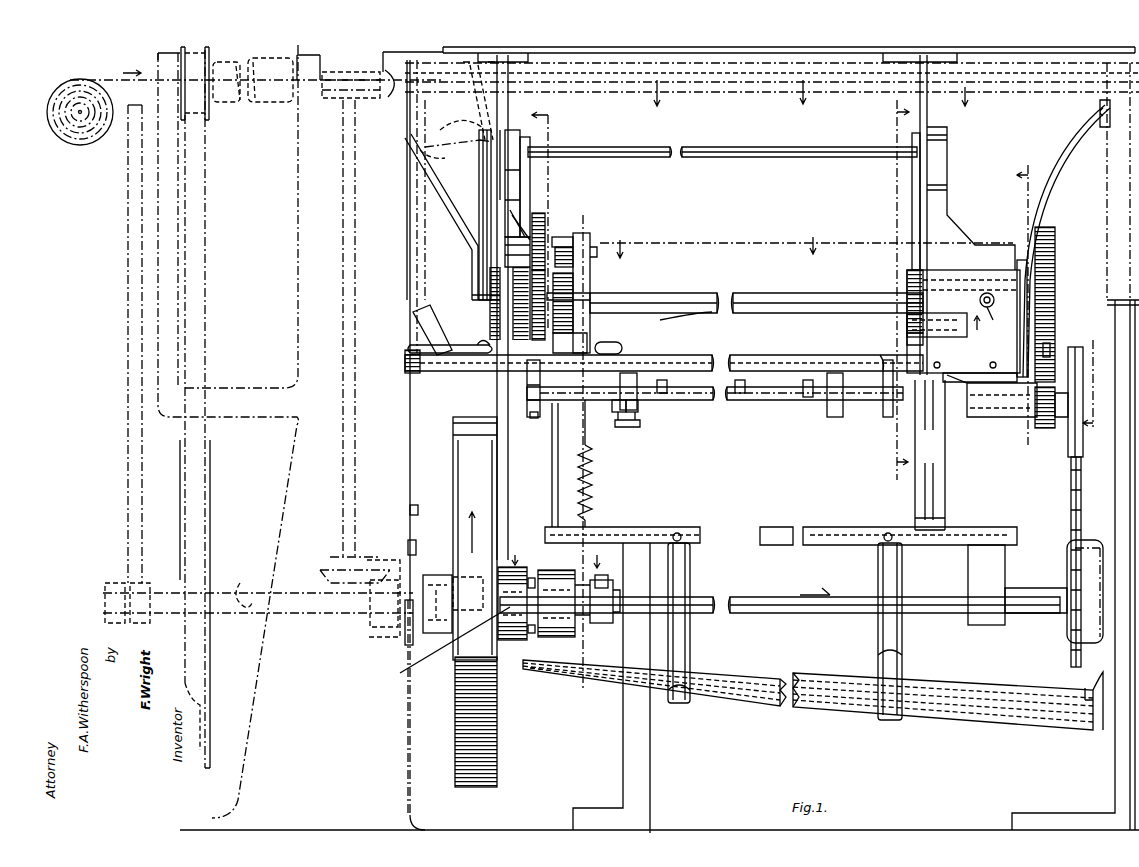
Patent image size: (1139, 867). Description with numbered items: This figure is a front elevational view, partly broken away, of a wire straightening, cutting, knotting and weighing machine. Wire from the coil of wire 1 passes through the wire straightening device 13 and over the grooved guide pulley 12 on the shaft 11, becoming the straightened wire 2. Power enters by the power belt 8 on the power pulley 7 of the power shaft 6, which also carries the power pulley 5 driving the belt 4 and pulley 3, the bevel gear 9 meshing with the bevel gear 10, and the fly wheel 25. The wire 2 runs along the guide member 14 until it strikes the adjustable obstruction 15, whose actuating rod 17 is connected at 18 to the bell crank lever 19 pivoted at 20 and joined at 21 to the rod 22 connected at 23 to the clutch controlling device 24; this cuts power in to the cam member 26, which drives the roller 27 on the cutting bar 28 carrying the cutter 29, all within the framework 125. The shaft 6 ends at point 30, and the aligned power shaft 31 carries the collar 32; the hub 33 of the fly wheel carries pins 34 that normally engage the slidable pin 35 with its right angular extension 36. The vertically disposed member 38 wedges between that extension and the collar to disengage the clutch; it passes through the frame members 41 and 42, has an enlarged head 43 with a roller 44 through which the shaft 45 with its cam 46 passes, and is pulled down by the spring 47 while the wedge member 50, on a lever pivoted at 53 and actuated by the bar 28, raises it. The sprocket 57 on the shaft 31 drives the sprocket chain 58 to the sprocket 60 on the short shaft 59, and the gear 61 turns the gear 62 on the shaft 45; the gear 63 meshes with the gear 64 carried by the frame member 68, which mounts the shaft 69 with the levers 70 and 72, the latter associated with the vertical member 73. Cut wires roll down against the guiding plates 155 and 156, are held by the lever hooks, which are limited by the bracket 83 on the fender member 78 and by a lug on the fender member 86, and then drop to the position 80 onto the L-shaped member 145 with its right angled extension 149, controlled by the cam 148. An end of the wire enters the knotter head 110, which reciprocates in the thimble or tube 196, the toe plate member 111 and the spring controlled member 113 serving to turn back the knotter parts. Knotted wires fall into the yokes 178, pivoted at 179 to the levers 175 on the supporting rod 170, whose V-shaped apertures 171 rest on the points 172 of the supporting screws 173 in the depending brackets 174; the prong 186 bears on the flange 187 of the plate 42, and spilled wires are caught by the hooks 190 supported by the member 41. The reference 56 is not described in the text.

The coil of wire 1 is at (72, 142).
The straightened wire 2 is at (380, 74).
The pulley 3 is at (212, 55).
The belt 4 is at (208, 222).
The power pulley 5 is at (210, 538).
The power shaft 6 is at (243, 588).
The power pulley 7 is at (125, 580).
The power belt 8 is at (128, 470).
The bevel gear 9 is at (375, 628).
The bevel gear 10 is at (330, 568).
The shaft 11 is at (343, 447).
The grooved guide pulley 12 is at (340, 72).
The wire straightening device 13 is at (272, 62).
The guide member 14 is at (725, 85).
The adjustable obstruction 15 is at (1035, 96).
The actuating rod 17 is at (1010, 69).
The connection 18 is at (466, 66).
The bell crank lever 19 is at (455, 126).
The pivot 20 is at (482, 143).
The connection 21 is at (450, 158).
The rod 22 is at (420, 234).
The connection 23 is at (410, 510).
The clutch controlling device 24 is at (408, 547).
The fly wheel 25 is at (458, 675).
The cam member 26 is at (440, 640).
The roller 27 is at (398, 646).
The cutting bar 28 is at (432, 318).
The cutter 29 is at (393, 96).
The terminal point of power shaft 30 is at (484, 575).
The power shaft 31 is at (555, 572).
The collar 32 is at (568, 638).
The hub 33 is at (441, 645).
The pins 34 is at (530, 575).
The slidable pin 35 is at (592, 618).
The right angular extension 36 is at (608, 580).
The vertically disposed member 38 is at (590, 430).
The frame member 41 is at (645, 527).
The frame member 42 is at (705, 356).
The enlarged head 43 is at (590, 272).
The roller 44 is at (573, 238).
The shaft 45 is at (1066, 298).
The cam 46 is at (573, 290).
The spring 47 is at (592, 458).
The wedge member 50 is at (604, 345).
The pivot 53 is at (483, 338).
The block 56 is at (412, 340).
The sprocket 57 is at (1068, 570).
The sprocket chain 58 is at (1081, 490).
The short shaft 59 is at (975, 420).
The sprocket 60 is at (1068, 440).
The gear 61 is at (1040, 428).
The gear 62 is at (1055, 228).
The gear 63 is at (530, 330).
The gear 64 is at (544, 218).
The frame member 68 is at (516, 130).
The shaft 69 is at (736, 147).
The lever 70 is at (530, 173).
The lever 72 is at (912, 175).
The vertical member 73 is at (947, 130).
The fender member 78 is at (498, 186).
The wire position 80 is at (705, 296).
The bracket 83 is at (520, 235).
The fender member 86 is at (927, 112).
The knotter head 110 is at (999, 316).
The toe plate member 111 is at (1017, 325).
The spring controlled member 113 is at (1052, 345).
The framework 125 is at (408, 726).
The L-shaped member 145 is at (907, 340).
The cam 148 is at (907, 278).
The right angled extension 149 is at (947, 326).
The guiding plate 155 is at (480, 193).
The guiding plate 156 is at (1053, 183).
The supporting rod 170 is at (713, 398).
The V-shaped apertures 171 is at (638, 406).
The points 172 is at (618, 406).
The supporting screws 173 is at (638, 425).
The depending brackets 174 is at (620, 381).
The horizontally disposed levers 175 is at (803, 386).
The yokes 178 is at (535, 420).
The pivot 179 is at (667, 388).
The upwardly extending prong 186 is at (866, 355).
The flange 187 is at (527, 377).
The hooks 190 is at (690, 655).
The thimble or tube 196 is at (980, 303).